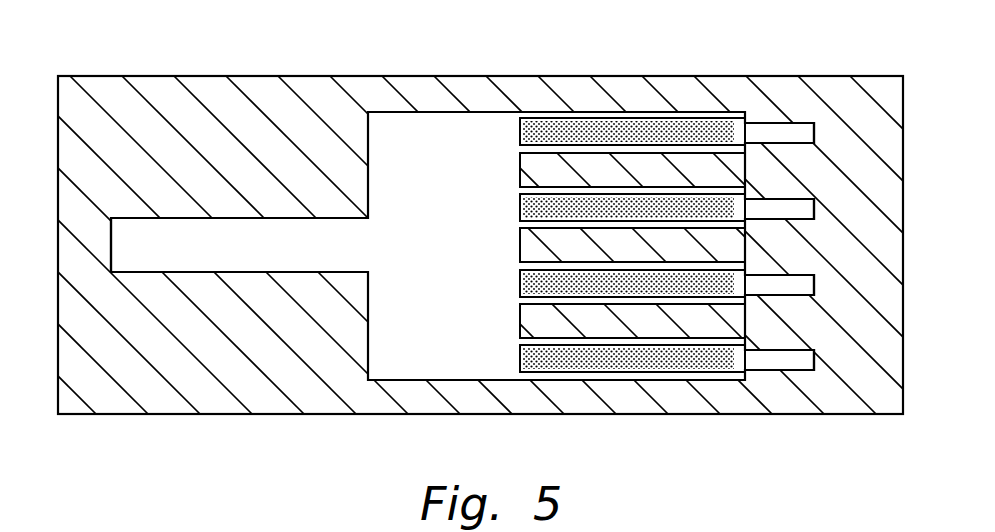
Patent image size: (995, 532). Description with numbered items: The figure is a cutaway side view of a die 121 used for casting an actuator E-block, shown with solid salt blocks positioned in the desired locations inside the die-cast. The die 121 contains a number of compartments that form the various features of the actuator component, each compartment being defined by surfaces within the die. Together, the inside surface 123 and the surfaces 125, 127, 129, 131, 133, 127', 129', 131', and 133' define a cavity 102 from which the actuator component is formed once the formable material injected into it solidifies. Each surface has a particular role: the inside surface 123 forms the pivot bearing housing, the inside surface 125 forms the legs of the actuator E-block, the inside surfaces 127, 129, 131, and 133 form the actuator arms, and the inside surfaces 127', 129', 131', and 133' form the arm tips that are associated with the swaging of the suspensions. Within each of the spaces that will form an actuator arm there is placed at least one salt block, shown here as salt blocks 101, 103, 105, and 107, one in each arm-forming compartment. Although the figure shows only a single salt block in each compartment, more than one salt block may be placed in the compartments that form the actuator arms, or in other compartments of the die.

The salt block 101 is at (595, 131).
The cavity 102 is at (424, 254).
The salt block 103 is at (528, 212).
The salt block 105 is at (527, 290).
The salt block 107 is at (621, 364).
The die 121 is at (304, 78).
The inside surface 123 is at (393, 116).
The inside surface 125 is at (196, 272).
The inside surface 127 is at (586, 138).
The inside surface 129 is at (586, 200).
The inside surface 131 is at (588, 276).
The inside surface 133 is at (588, 352).
The inside surface 127' is at (792, 91).
The inside surface 129' is at (803, 186).
The inside surface 131' is at (803, 262).
The inside surface 133' is at (803, 339).